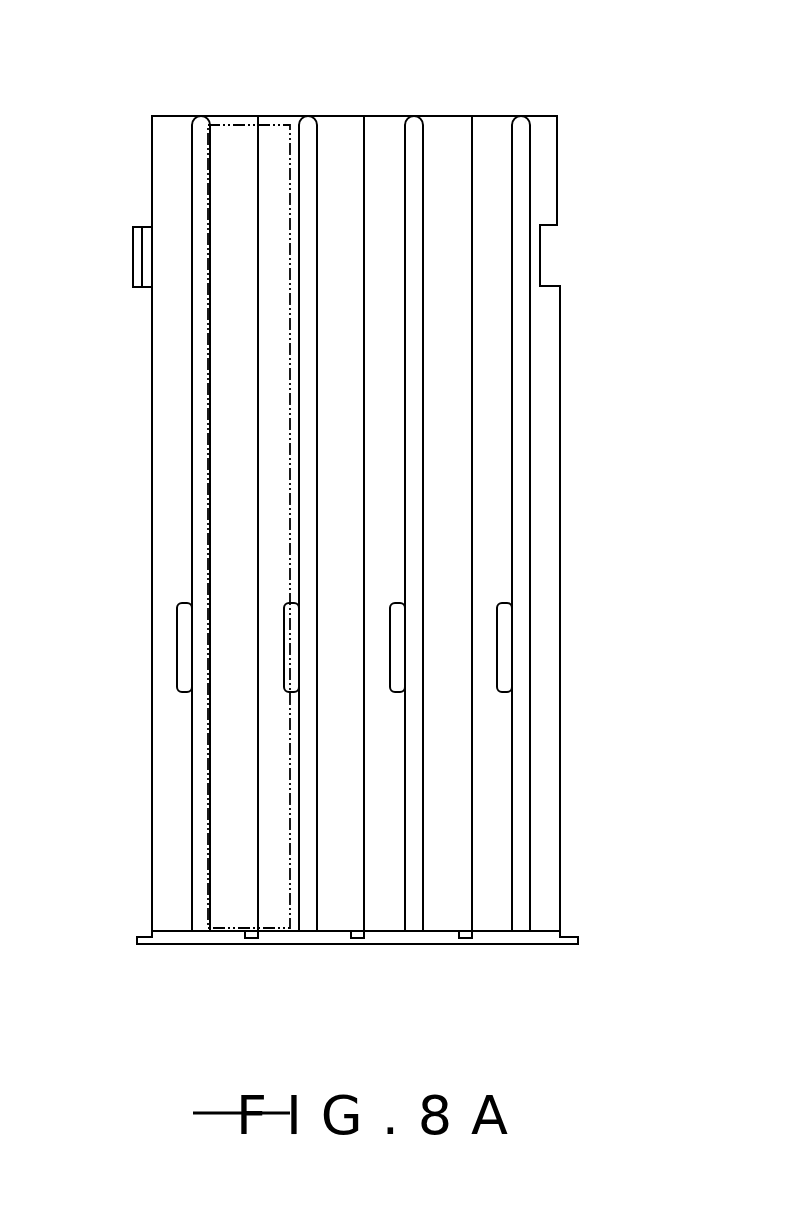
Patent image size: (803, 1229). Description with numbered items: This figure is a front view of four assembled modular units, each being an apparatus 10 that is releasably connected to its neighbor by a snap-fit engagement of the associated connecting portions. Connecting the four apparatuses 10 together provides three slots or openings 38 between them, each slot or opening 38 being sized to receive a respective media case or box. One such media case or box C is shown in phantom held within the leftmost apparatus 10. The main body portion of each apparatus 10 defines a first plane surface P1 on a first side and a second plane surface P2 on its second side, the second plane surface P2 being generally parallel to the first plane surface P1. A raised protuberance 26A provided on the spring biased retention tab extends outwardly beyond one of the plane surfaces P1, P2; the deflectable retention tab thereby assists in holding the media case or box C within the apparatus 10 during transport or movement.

The apparatus 10 is at (541, 116).
The raised protuberance 26A is at (288, 648).
The media case or box C is at (286, 479).
The first plane surface P1 is at (298, 223).
The second plane surface P2 is at (315, 249).
The slots or openings 38 is at (238, 889).